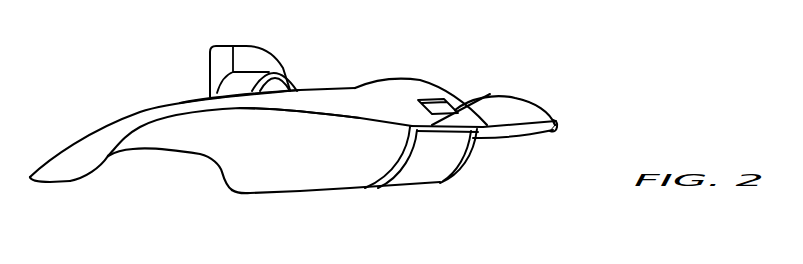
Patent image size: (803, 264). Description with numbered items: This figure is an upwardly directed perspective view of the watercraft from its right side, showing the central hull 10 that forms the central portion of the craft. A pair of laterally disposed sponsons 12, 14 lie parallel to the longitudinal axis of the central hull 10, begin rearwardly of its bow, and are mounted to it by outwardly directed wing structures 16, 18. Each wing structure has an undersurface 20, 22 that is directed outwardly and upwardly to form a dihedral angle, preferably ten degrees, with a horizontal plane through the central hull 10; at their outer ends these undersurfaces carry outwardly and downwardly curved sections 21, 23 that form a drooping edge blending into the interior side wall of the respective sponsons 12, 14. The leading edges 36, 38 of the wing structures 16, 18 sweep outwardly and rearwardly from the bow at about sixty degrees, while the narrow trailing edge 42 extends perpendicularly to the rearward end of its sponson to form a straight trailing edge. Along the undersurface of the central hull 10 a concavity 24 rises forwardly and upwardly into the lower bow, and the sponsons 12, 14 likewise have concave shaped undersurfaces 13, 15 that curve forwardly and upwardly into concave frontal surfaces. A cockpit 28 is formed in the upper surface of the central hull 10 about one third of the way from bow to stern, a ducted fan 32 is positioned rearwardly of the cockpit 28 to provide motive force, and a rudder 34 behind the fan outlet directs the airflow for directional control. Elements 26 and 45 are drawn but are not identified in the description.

The central hull 10 is at (350, 175).
The sponson 12 is at (560, 118).
The concave shaped undersurface 13 is at (550, 130).
The sponson 14 is at (50, 173).
The concave shaped undersurface 15 is at (85, 170).
The wing structure 16 is at (517, 100).
The wing structure 18 is at (135, 108).
The undersurface 20 is at (510, 127).
The outwardly and downwardly curved section 21 is at (528, 130).
The undersurface 22 is at (222, 141).
The outwardly and downwardly curved section 23 is at (112, 162).
The concavity 24 is at (300, 195).
The aft bulkhead 26 is at (485, 97).
The cockpit 28 is at (357, 81).
The ducted fan 32 is at (290, 73).
The rudder 34 is at (221, 47).
The leading edge 36 is at (532, 110).
The leading edge 38 is at (183, 112).
The trailing edge 42 is at (180, 160).
The hatch 45 is at (432, 98).